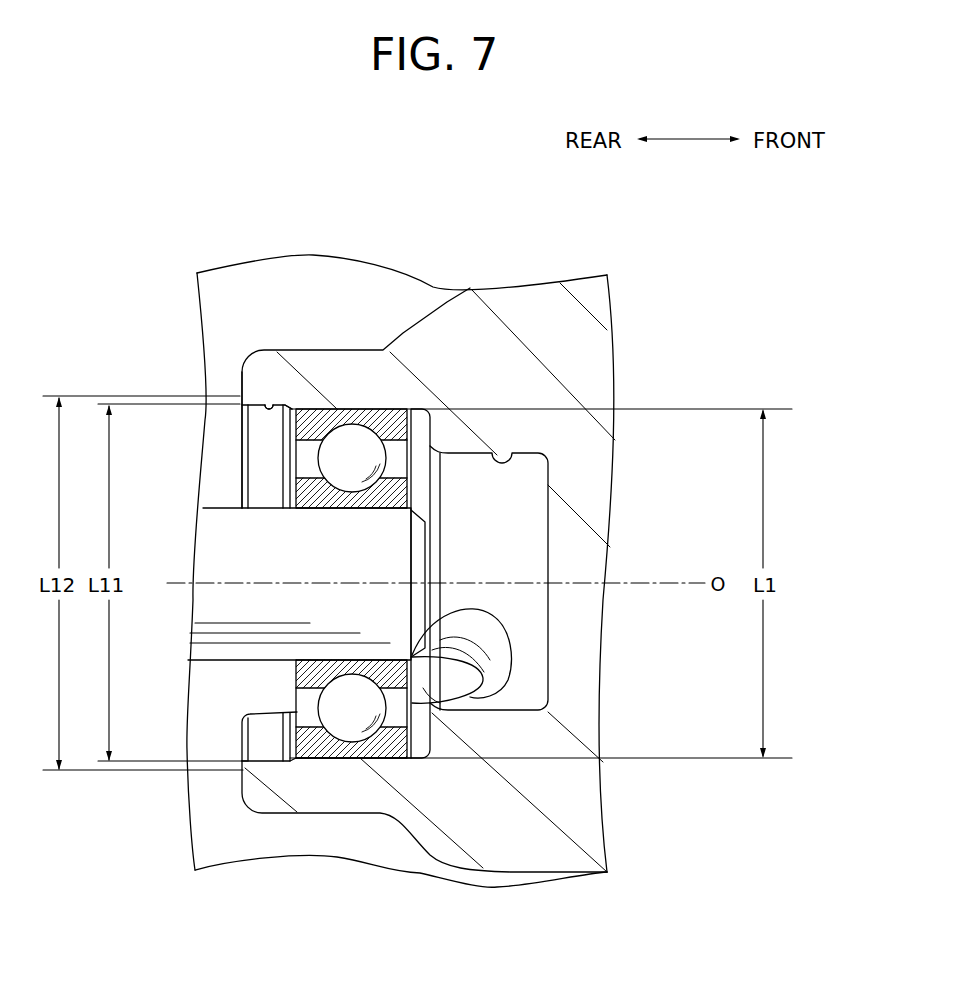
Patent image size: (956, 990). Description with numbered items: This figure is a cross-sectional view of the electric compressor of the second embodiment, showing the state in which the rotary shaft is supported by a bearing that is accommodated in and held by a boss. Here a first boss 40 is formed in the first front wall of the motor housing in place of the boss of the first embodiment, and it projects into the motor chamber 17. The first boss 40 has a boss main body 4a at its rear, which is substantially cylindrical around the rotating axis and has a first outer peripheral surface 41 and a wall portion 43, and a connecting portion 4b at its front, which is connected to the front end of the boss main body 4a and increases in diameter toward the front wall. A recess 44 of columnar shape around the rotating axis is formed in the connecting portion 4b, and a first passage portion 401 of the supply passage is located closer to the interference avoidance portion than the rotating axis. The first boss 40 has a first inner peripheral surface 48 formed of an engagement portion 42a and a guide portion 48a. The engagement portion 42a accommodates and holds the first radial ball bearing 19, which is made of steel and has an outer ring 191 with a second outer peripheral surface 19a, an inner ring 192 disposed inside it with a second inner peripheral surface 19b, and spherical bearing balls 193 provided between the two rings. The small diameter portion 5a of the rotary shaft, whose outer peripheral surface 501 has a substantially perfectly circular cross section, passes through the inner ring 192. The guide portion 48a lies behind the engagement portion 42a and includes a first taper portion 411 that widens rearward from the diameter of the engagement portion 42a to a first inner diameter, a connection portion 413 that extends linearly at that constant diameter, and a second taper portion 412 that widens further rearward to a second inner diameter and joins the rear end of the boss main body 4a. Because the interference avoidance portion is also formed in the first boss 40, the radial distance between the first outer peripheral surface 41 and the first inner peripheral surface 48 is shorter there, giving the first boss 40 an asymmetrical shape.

The first boss 40 is at (446, 286).
The connecting portion 4b is at (527, 297).
The boss main body 4a is at (339, 344).
The second taper portion 412 is at (236, 402).
The connection portion 413 is at (270, 404).
The first taper portion 411 is at (300, 404).
The bearing balls 193 is at (358, 438).
The outer ring 191 is at (405, 412).
The inner ring 192 is at (352, 509).
The first radial ball bearing 19 is at (301, 462).
The first inner peripheral surface 48 is at (421, 423).
The recess 44 is at (510, 461).
The small diameter portion 5a is at (224, 538).
The outer peripheral surface 501 is at (205, 661).
The first passage portion 401 is at (452, 686).
The second inner peripheral surface 19b is at (359, 728).
The second outer peripheral surface 19a is at (397, 760).
The guide portion 48a is at (264, 774).
The motor chamber 17 is at (248, 850).
The first outer peripheral surface 41 is at (307, 815).
The engagement portion 42a is at (344, 760).
The wall portion 43 is at (368, 798).